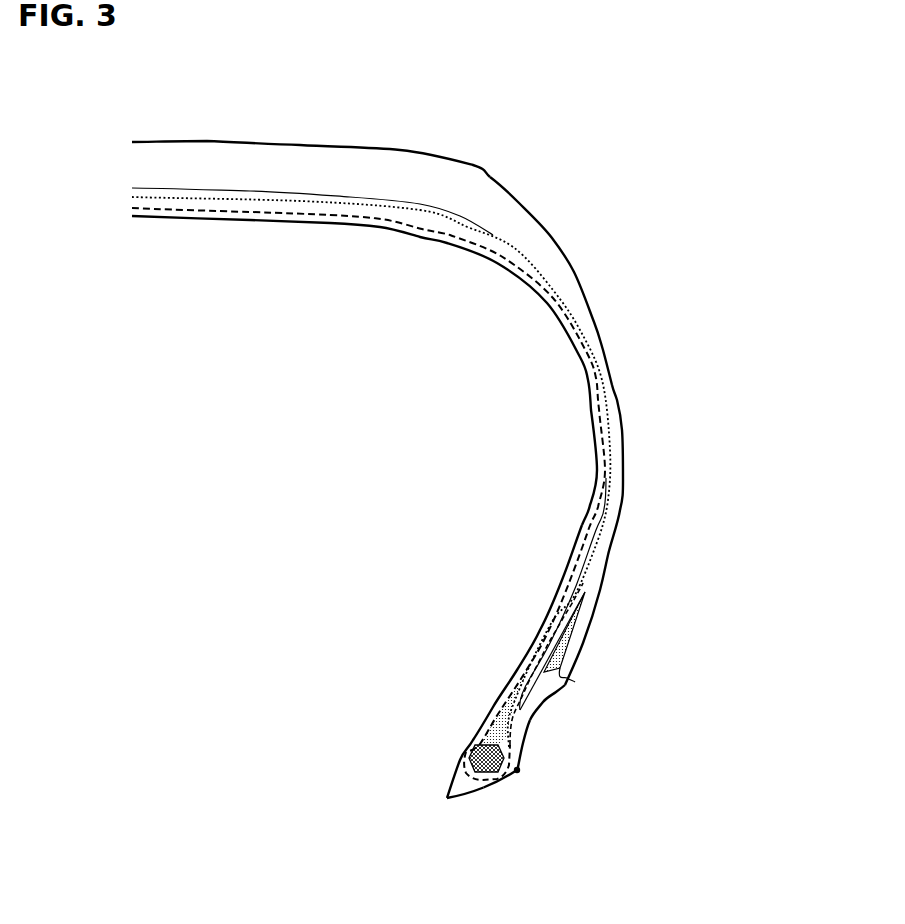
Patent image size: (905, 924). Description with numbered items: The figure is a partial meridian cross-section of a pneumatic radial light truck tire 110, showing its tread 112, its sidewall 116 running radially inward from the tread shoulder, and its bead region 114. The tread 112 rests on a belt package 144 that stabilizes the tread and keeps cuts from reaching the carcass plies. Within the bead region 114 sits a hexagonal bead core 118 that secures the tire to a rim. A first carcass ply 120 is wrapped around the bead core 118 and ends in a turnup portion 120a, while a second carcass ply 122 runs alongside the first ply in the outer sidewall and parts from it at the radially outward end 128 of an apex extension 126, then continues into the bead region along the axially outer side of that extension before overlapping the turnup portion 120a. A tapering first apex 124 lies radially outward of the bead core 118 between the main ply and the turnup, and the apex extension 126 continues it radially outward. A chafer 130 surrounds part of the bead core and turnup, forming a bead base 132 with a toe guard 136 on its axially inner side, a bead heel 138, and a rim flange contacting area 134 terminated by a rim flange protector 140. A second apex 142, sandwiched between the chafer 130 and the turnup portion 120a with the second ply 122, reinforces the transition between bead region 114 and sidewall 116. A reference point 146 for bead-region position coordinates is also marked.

The pneumatic radial light truck tire 110 is at (603, 168).
The tread 112 is at (207, 141).
The bead region 114 is at (477, 652).
The sidewall 116 is at (613, 383).
The hexagonal bead core 118 is at (468, 763).
The first carcass ply 120 is at (470, 244).
The turnup portion 120a is at (583, 583).
The second carcass ply 122 is at (552, 302).
The first apex 124 is at (466, 750).
The apex extension 126 is at (590, 547).
The radially outward end of the apex extension 128 is at (606, 478).
The chafer 130 is at (532, 720).
The bead base 132 is at (483, 797).
The rim flange contacting area 134 is at (524, 723).
The toe guard 136 is at (457, 798).
The bead heel 138 is at (532, 770).
The rim flange protector 140 is at (560, 693).
The second apex 142 is at (558, 668).
The belt package 144 is at (427, 202).
The reference point 146 is at (517, 778).